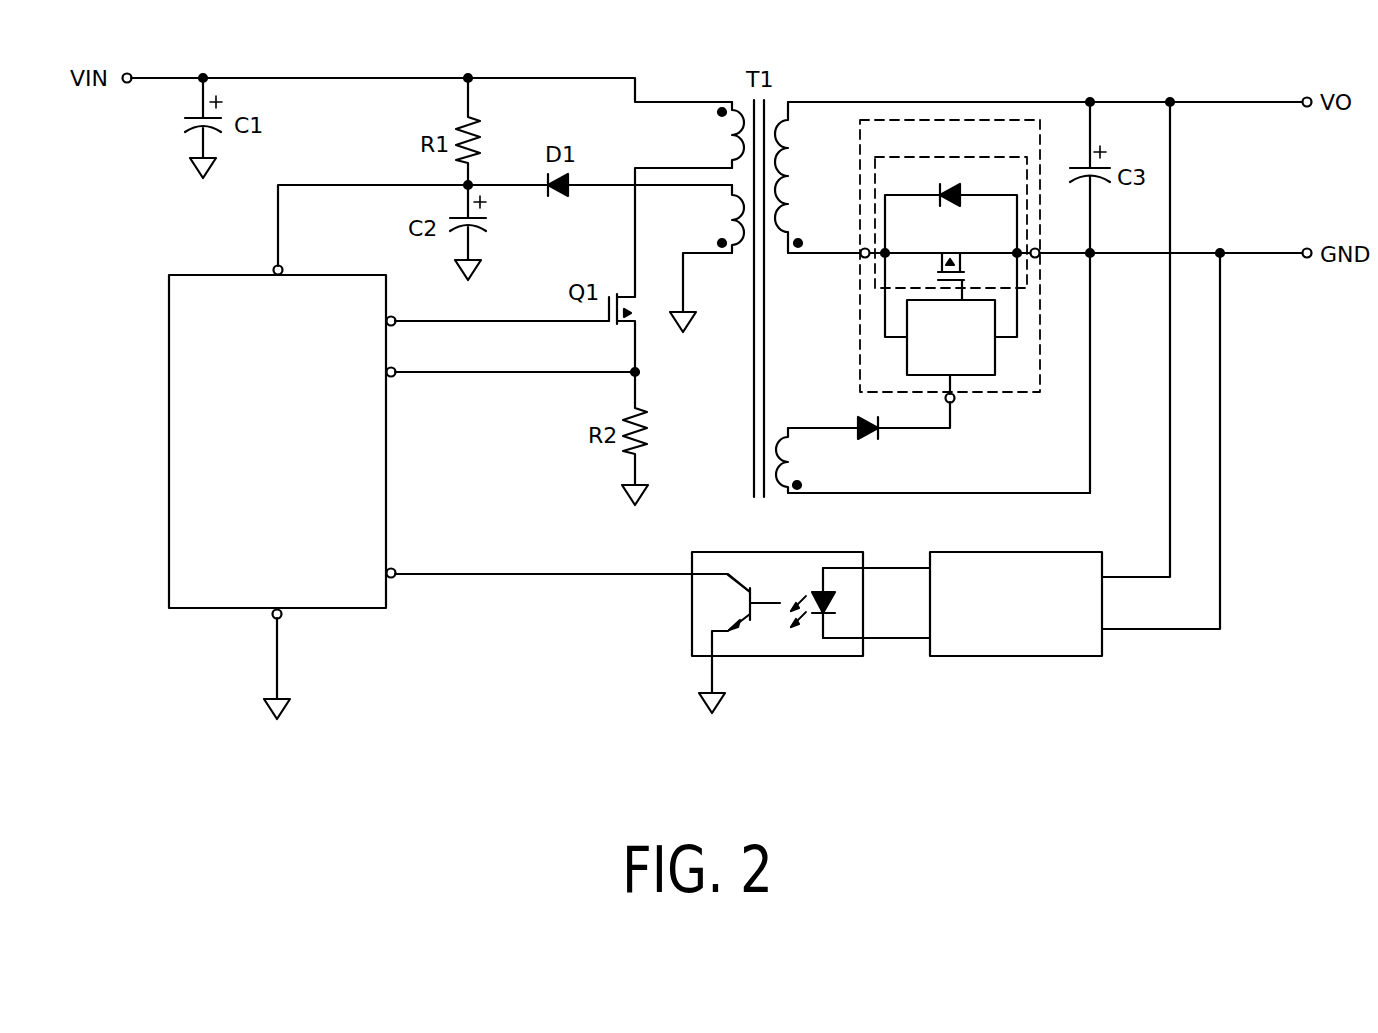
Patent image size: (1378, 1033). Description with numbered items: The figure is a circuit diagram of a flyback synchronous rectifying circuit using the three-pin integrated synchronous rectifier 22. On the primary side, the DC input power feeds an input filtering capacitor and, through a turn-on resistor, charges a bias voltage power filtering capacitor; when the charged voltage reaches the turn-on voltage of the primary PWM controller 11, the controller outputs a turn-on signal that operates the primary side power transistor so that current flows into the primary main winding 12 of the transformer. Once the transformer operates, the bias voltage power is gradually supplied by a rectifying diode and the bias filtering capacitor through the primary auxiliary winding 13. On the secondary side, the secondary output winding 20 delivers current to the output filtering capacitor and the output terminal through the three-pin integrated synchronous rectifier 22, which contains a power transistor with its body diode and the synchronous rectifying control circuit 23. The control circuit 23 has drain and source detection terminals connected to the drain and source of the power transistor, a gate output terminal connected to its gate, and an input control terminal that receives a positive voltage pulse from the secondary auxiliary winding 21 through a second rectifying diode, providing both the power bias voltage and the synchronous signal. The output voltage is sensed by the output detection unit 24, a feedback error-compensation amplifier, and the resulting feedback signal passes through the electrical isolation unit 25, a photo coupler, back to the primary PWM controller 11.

The primary PWM controller 11 is at (169, 440).
The primary main winding 12 is at (716, 135).
The primary auxiliary winding 13 is at (716, 219).
The secondary output winding 20 is at (802, 177).
The secondary auxiliary winding 21 is at (803, 460).
The three-pin integrated synchronous rectifier 22 is at (966, 244).
The synchronous rectifying control circuit 23 is at (995, 360).
The output detection unit 24 is at (1025, 657).
The electrical isolation unit 25 is at (808, 657).